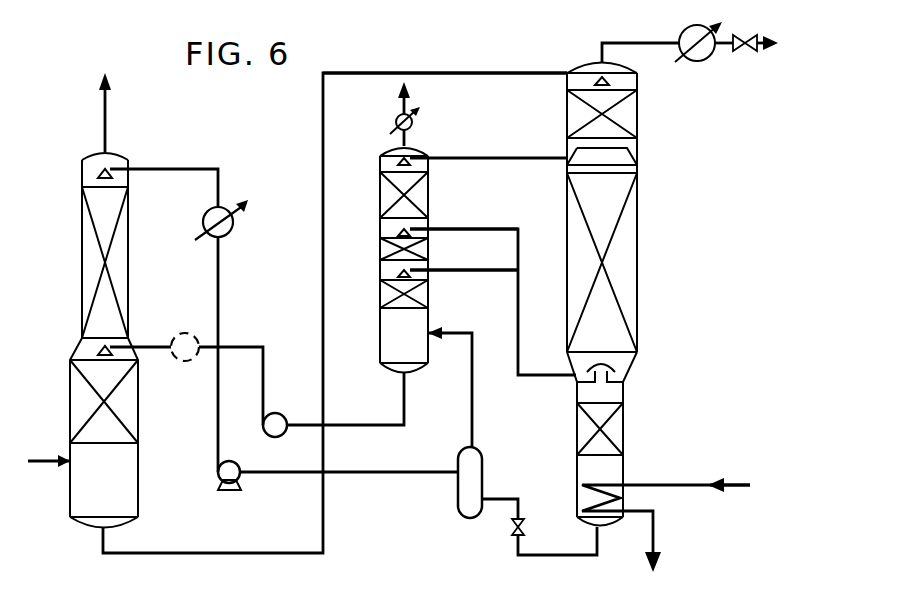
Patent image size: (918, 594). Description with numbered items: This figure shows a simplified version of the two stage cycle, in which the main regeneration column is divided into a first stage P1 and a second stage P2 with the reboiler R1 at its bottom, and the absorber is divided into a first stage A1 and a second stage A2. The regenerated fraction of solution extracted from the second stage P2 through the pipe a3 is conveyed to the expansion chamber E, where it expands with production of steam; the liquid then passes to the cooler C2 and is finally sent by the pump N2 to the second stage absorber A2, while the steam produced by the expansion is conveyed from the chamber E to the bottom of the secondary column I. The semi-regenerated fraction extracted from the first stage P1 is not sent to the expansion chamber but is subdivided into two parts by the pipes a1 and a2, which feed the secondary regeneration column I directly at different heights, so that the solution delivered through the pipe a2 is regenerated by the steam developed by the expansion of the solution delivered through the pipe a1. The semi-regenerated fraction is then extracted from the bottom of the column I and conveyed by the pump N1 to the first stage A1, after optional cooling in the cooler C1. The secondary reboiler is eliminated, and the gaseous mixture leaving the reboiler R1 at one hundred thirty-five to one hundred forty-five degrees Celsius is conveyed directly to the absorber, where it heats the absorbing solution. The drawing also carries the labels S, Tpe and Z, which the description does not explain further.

The first stage absorber A1 is at (91, 433).
The second stage absorber A2 is at (90, 245).
The cooler C1 is at (192, 361).
The cooler C2 is at (225, 234).
The pump N1 is at (263, 432).
The pump N2 is at (211, 482).
The stripping column S is at (394, 241).
The secondary regeneration column I is at (385, 257).
The pipe a1 is at (464, 253).
The pipe a2 is at (464, 215).
The pipe a3 is at (535, 534).
The expansion chamber E is at (459, 482).
The gas feed line Tpe is at (445, 62).
The top section of column Z is at (613, 114).
The first stage of main column P1 is at (662, 203).
The second stage of main column P2 is at (614, 454).
The reboiler R1 is at (710, 501).